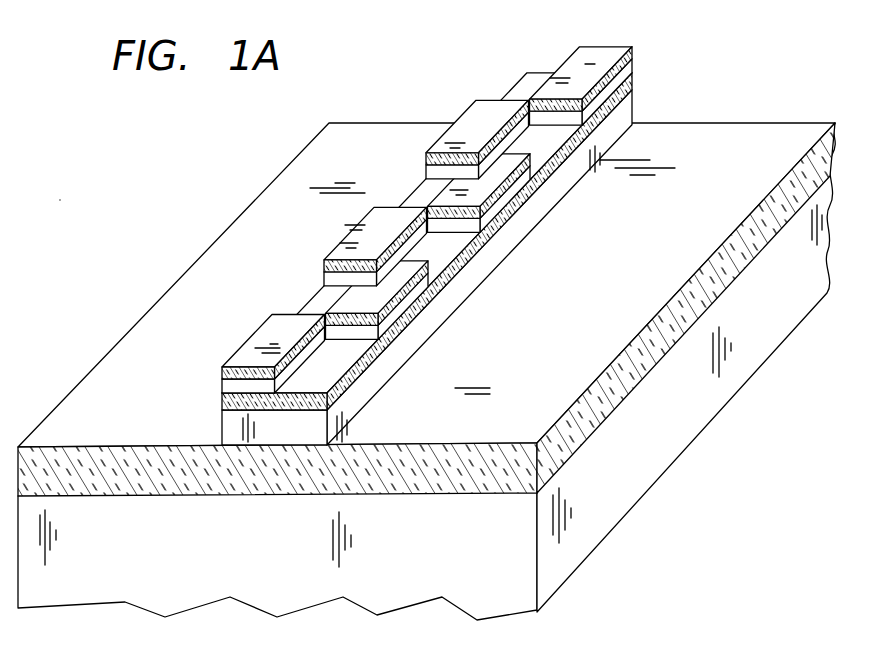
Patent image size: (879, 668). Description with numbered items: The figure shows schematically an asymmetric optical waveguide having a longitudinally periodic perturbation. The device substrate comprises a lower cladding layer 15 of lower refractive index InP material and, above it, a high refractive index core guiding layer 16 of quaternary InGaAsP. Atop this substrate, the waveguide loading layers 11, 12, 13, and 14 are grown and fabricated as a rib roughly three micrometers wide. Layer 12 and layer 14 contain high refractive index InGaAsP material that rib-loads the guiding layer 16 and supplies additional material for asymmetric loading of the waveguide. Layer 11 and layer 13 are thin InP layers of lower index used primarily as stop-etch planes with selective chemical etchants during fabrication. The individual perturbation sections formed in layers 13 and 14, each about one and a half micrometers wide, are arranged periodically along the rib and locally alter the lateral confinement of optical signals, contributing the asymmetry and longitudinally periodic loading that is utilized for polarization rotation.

The thin lower index stop-etch layer 11 is at (333, 437).
The waveguide loading layer 12 is at (345, 388).
The thin lower index stop-etch layer 13 is at (222, 387).
The perturbation loading layer 14 is at (266, 333).
The lower cladding layer 15 is at (533, 563).
The core guiding layer 16 is at (602, 425).